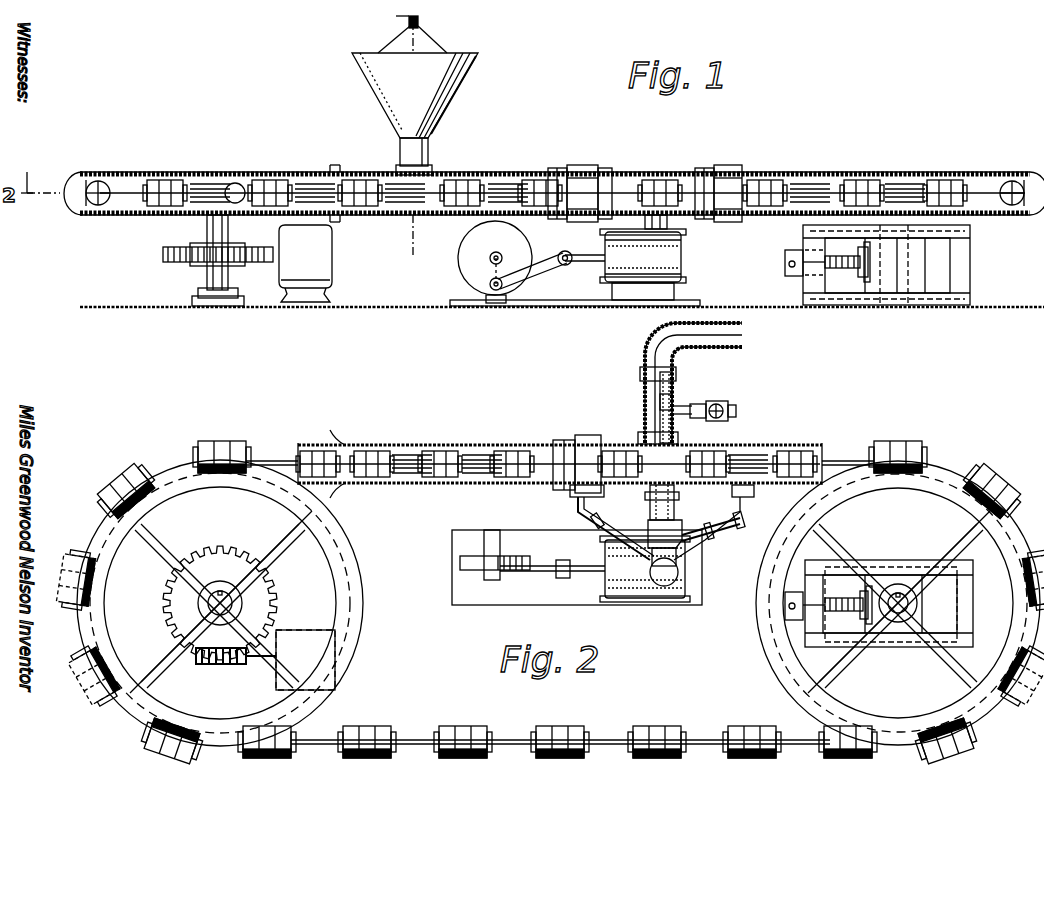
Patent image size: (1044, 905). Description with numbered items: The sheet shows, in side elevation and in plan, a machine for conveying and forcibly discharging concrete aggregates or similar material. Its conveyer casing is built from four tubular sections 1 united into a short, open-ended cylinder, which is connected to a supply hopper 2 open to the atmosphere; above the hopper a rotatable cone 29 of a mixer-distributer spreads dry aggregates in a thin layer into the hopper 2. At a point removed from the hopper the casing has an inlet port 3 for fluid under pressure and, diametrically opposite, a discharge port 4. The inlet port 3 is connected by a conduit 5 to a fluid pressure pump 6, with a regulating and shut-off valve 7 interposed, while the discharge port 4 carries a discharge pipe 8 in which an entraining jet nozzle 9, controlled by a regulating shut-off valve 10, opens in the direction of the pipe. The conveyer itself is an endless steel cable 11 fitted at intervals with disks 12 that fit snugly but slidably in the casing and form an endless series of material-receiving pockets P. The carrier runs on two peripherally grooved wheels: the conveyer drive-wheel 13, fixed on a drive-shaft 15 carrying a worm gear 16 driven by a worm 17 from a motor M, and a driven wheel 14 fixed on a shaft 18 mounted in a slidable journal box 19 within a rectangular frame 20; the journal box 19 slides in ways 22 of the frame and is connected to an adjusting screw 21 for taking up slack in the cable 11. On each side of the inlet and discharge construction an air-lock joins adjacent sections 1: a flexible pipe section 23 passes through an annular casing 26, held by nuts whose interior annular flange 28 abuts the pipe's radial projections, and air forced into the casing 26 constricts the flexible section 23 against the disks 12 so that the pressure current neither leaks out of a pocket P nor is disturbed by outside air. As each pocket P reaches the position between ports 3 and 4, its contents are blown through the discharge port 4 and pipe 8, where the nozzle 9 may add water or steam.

In FIG. 1, the tubular section 1 is at (497, 168).
In FIG. 2, the tubular section 1 is at (455, 445).
In FIG. 1, the supply hopper 2 is at (415, 114).
In FIG. 1, the inlet port 3 is at (420, 23).
In FIG. 2, the inlet port 3 is at (648, 504).
In FIG. 2, the discharge port 4 is at (644, 432).
In FIG. 2, the conduit 5 is at (680, 524).
In FIG. 1, the fluid pressure pump 6 is at (576, 260).
In FIG. 2, the fluid pressure pump 6 is at (583, 567).
In FIG. 2, the regulating and shut-off valve 7 is at (713, 523).
In FIG. 2, the discharge pipe 8 is at (672, 392).
In FIG. 2, the entraining jet nozzle 9 is at (680, 405).
In FIG. 2, the regulating shut-off valve 10 is at (730, 412).
In FIG. 1, the endless steel cable 11 is at (812, 185).
In FIG. 2, the endless steel cable 11 is at (258, 460).
In FIG. 2, the disks 12 is at (222, 440).
In FIG. 1, the conveyer drive-wheel 13 is at (205, 170).
In FIG. 2, the conveyer drive-wheel 13 is at (345, 556).
In FIG. 1, the driven wheel 14 is at (978, 170).
In FIG. 2, the driven wheel 14 is at (772, 640).
In FIG. 2, the drive-shaft 15 is at (218, 605).
In FIG. 2, the worm gear 16 is at (258, 600).
In FIG. 2, the worm 17 is at (224, 666).
In FIG. 2, the shaft 18 is at (899, 608).
In FIG. 1, the slidable journal box 19 is at (917, 280).
In FIG. 2, the slidable journal box 19 is at (925, 606).
In FIG. 2, the rectangular frame 20 is at (888, 562).
In FIG. 1, the adjusting screw 21 is at (850, 275).
In FIG. 2, the adjusting screw 21 is at (846, 592).
In FIG. 1, the ways 22 is at (946, 296).
In FIG. 1, the flexible pipe section 23 is at (555, 167).
In FIG. 2, the flexible pipe section 23 is at (560, 440).
In FIG. 1, the annular casing 26 is at (583, 165).
In FIG. 2, the annular casing 26 is at (588, 436).
In FIG. 2, the interior annular flange 28 is at (748, 512).
In FIG. 1, the cone 29 is at (443, 50).
In FIG. 1, the motor M is at (305, 263).
In FIG. 2, the motor M is at (305, 660).
In FIG. 2, the pockets P is at (362, 447).